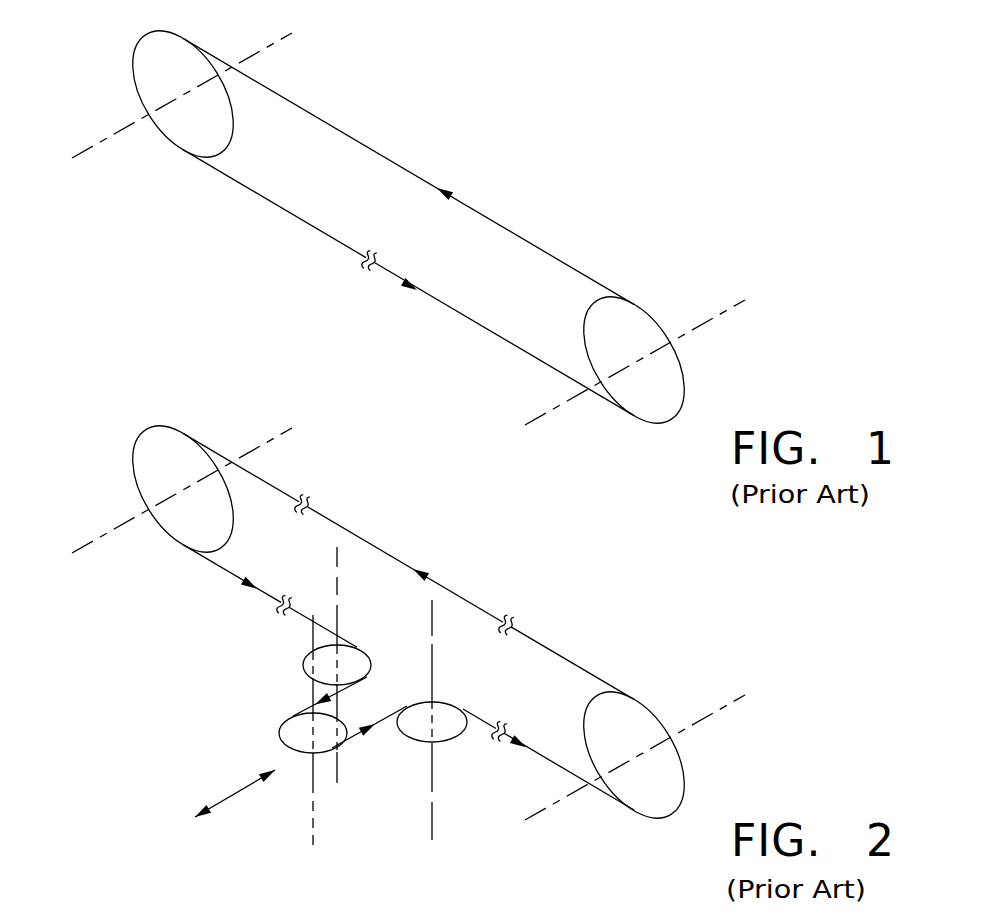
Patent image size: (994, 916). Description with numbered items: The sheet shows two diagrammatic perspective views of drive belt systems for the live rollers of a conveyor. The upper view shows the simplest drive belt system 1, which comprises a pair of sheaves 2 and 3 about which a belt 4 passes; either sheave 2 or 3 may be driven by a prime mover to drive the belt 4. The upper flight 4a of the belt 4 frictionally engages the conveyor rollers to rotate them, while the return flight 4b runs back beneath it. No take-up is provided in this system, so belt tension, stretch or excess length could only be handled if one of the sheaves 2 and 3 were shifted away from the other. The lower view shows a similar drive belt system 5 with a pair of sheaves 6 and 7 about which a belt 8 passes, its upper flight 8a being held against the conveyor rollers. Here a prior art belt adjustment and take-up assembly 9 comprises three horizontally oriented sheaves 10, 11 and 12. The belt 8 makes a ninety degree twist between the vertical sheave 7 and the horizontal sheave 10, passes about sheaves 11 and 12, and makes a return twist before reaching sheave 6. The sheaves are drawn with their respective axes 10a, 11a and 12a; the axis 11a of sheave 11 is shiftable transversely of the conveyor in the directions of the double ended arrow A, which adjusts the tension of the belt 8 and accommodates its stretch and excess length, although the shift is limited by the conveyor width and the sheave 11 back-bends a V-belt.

In FIG. 1, the drive belt system 1 is at (408, 226).
In FIG. 1, the sheave 2 is at (667, 378).
In FIG. 1, the sheave 3 is at (155, 62).
In FIG. 1, the belt 4 is at (408, 226).
In FIG. 1, the upper flight 4a is at (334, 126).
In FIG. 1, the return flight 4b is at (330, 236).
In FIG. 2, the drive belt system 5 is at (408, 632).
In FIG. 2, the sheave 6 is at (633, 722).
In FIG. 2, the sheave 7 is at (150, 454).
In FIG. 2, the belt 8 is at (408, 566).
In FIG. 2, the upper flight 8a is at (352, 528).
In FIG. 2, the belt adjustment and take-up assembly 9 is at (350, 699).
In FIG. 2, the sheave 10 is at (352, 662).
In FIG. 2, the rotation axis of first loop 10a is at (335, 563).
In FIG. 2, the sheave 11 is at (283, 720).
In FIG. 2, the axis 11a is at (313, 840).
In FIG. 2, the sheave 12 is at (448, 728).
In FIG. 2, the rotation axis of third loop 12a is at (432, 797).
In FIG. 2, the double ended arrow A is at (233, 793).